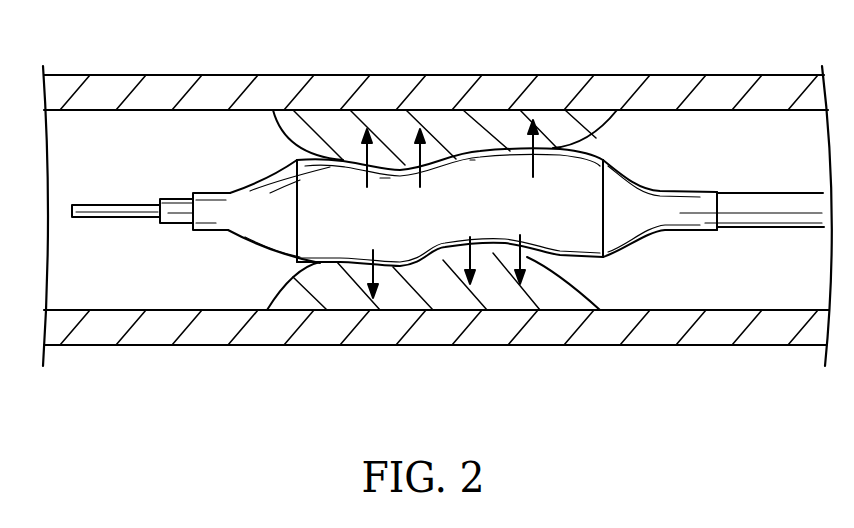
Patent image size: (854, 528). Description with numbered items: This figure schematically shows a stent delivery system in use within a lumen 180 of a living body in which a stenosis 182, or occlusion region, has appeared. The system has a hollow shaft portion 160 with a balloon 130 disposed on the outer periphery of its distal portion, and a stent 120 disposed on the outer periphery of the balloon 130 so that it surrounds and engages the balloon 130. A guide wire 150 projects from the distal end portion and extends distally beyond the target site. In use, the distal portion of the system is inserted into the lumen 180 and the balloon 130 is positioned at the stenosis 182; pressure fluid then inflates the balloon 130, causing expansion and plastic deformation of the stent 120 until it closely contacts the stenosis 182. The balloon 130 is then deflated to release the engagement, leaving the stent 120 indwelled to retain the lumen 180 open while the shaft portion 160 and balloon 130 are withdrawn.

The stent 120 is at (555, 177).
The balloon 130 is at (245, 203).
The guide wire 150 is at (109, 211).
The shaft portion 160 is at (770, 204).
The lumen 180 is at (720, 83).
The stenosis 182 is at (444, 123).